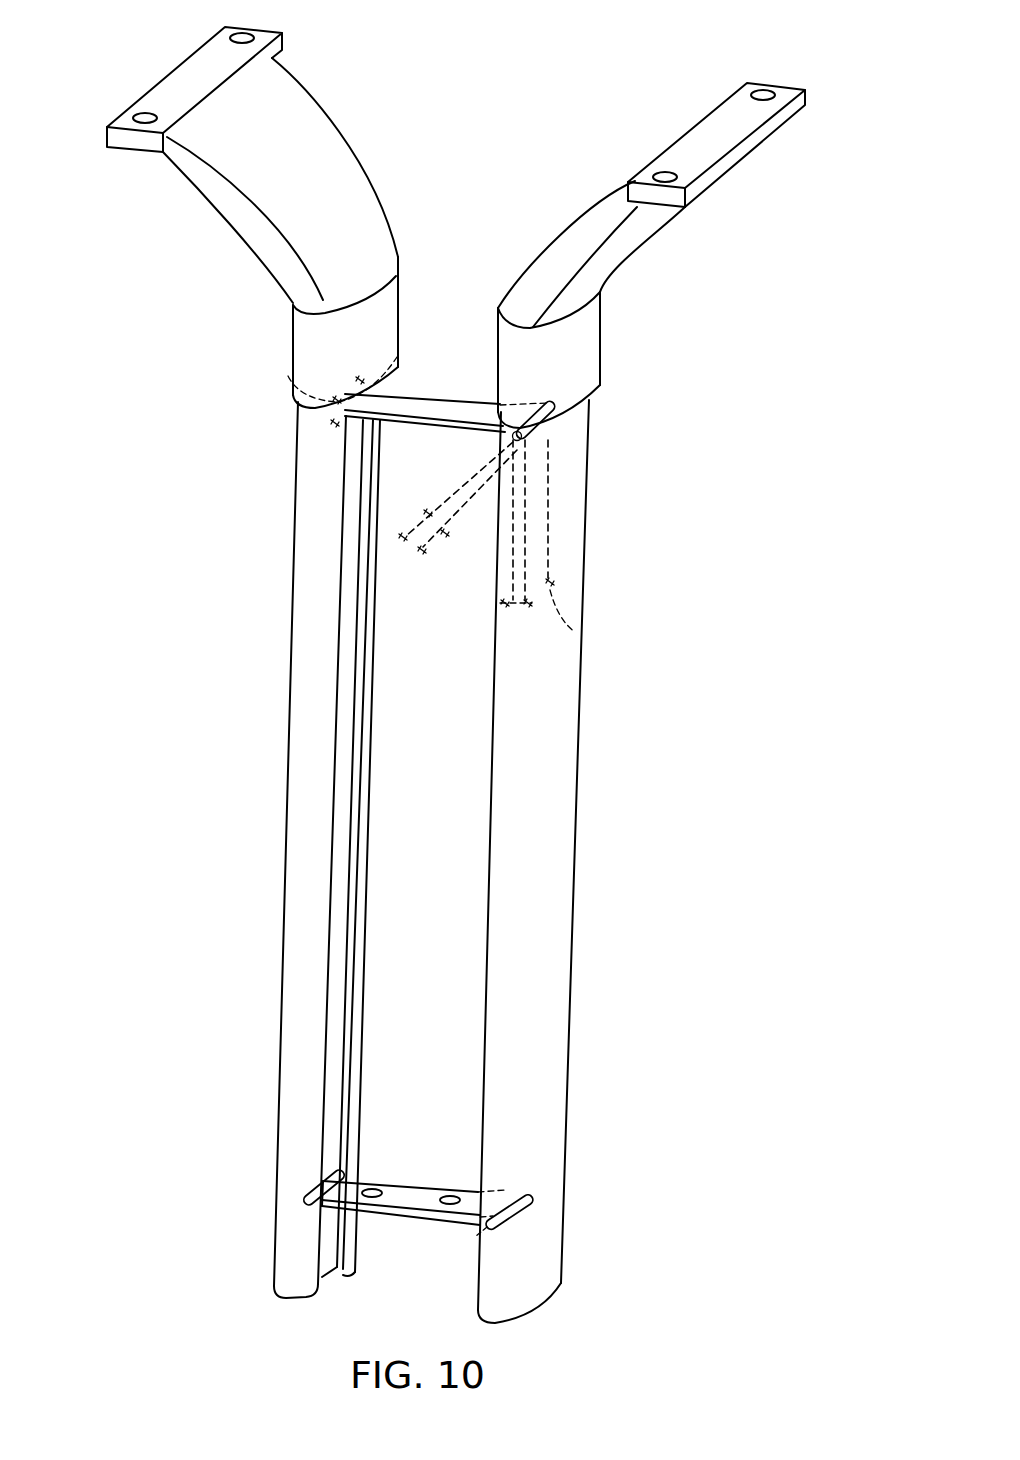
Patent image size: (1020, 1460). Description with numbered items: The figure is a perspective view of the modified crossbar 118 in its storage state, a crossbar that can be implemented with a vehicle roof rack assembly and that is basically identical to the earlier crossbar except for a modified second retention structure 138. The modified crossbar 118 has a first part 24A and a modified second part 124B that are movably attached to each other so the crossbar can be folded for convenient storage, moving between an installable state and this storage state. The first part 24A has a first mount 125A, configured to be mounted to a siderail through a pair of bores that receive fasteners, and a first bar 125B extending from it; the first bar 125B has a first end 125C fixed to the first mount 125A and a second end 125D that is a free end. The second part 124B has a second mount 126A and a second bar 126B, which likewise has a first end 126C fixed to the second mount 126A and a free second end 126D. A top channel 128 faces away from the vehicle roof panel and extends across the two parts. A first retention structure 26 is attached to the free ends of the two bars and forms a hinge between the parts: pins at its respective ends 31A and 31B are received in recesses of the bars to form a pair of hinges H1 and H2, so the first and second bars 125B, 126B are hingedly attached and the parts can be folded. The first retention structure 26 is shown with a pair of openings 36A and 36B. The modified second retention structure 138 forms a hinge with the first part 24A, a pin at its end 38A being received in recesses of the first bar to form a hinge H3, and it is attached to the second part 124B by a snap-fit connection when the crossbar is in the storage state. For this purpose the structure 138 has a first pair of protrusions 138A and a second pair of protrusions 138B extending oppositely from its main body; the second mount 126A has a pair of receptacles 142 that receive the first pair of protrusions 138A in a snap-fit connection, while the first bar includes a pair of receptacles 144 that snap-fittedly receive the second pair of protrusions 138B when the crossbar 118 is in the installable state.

The modified crossbar 118 is at (540, 52).
The modified second part 124B is at (200, 829).
The first part 24A is at (648, 767).
The second mount 126A is at (216, 208).
The second bar 126B is at (290, 775).
The first end of second bar 126C is at (288, 421).
The second end of second bar 126D is at (250, 1284).
The first mount 125A is at (634, 240).
The first bar 125B is at (573, 917).
The first end of first bar 125C is at (605, 410).
The second end of first bar 125D is at (572, 1240).
The top channel 128 is at (343, 875).
The receptacles 142 is at (336, 397).
The modified second retention structure 138 is at (412, 590).
The first pair of protrusions 138A is at (300, 380).
The second pair of protrusions 138B is at (333, 428).
The end of second retention structure 38A is at (540, 440).
The hinge H3 is at (545, 450).
The receptacles 144 is at (532, 604).
The first retention structure 26 is at (418, 1160).
The hole 36A is at (450, 1197).
The hole 36B is at (375, 1190).
The end of first retention structure 31A is at (513, 1228).
The end of first retention structure 31B is at (338, 1175).
The hinge H1 is at (478, 1242).
The hinge H2 is at (296, 1189).